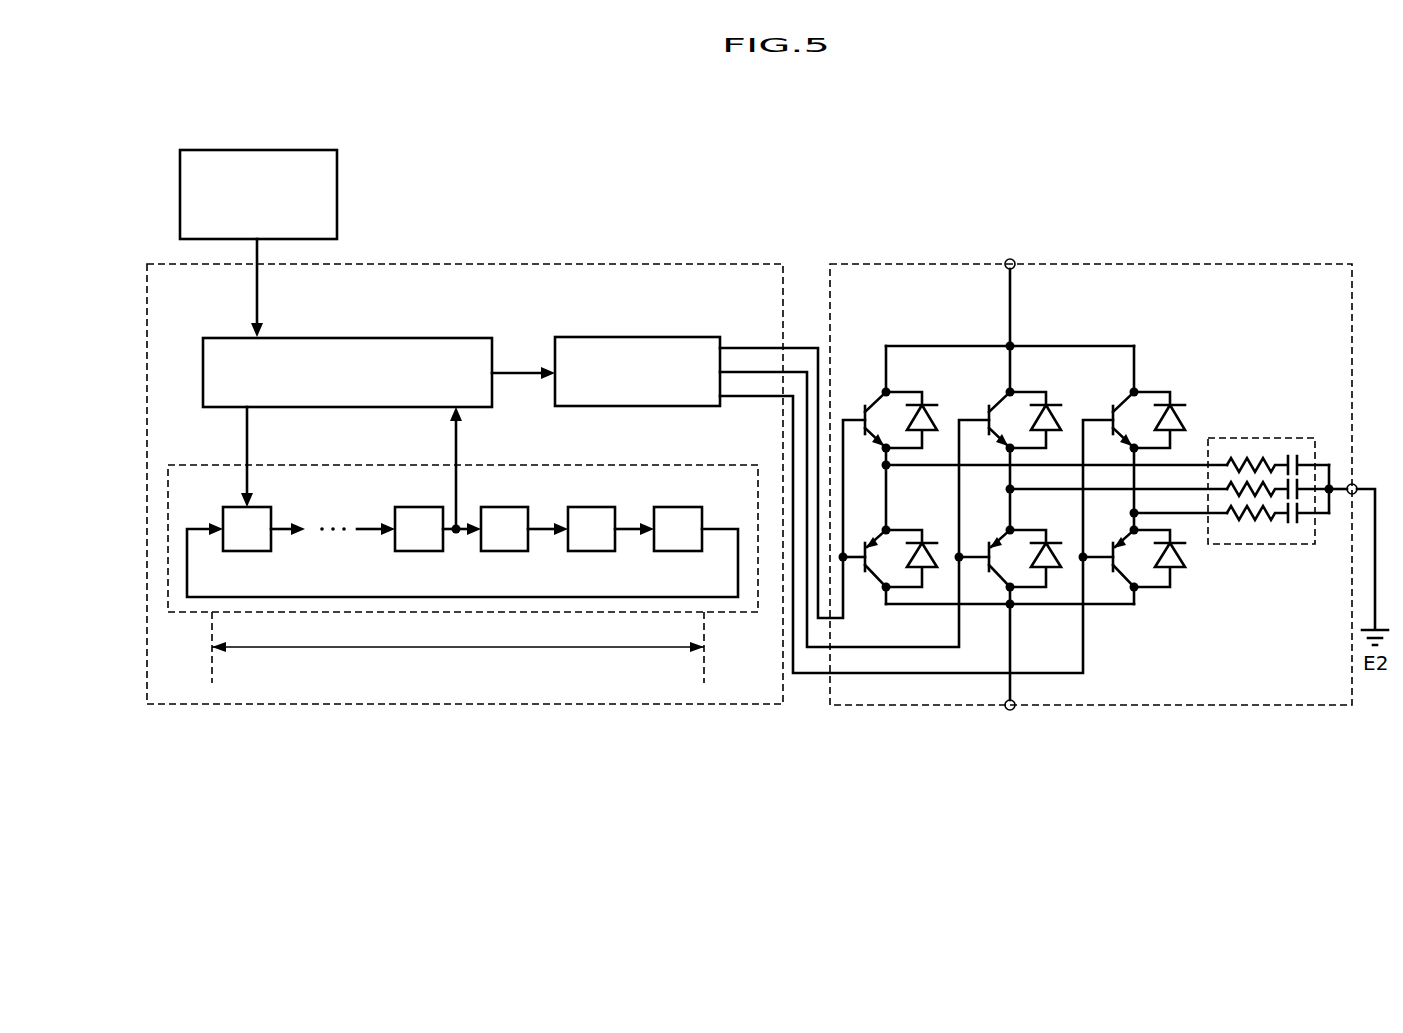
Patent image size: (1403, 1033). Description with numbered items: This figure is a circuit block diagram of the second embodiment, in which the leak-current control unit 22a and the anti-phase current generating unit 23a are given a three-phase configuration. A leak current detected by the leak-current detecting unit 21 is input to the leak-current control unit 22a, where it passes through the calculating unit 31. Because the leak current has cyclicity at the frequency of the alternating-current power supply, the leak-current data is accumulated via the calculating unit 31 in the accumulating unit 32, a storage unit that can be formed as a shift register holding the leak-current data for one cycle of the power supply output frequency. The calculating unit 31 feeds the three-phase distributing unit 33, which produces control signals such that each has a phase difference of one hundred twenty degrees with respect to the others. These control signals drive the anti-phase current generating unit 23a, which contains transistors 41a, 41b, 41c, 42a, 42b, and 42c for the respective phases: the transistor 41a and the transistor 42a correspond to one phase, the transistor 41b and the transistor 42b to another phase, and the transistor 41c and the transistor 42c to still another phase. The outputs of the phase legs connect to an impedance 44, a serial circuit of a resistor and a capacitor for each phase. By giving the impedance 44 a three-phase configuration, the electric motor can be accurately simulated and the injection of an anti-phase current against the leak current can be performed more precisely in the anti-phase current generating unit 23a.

The leak-current detecting unit 21 is at (297, 150).
The leak-current control unit 22a is at (674, 263).
The anti-phase current generating unit 23a is at (1273, 264).
The calculating unit 31 is at (421, 338).
The accumulating unit 32 is at (674, 465).
The three-phase distributing unit 33 is at (679, 338).
The transistor 41a is at (865, 408).
The transistor 41b is at (989, 408).
The transistor 41c is at (1113, 408).
The transistor 42a is at (860, 572).
The transistor 42b is at (989, 545).
The transistor 42c is at (1113, 545).
The impedance 44 is at (1273, 438).